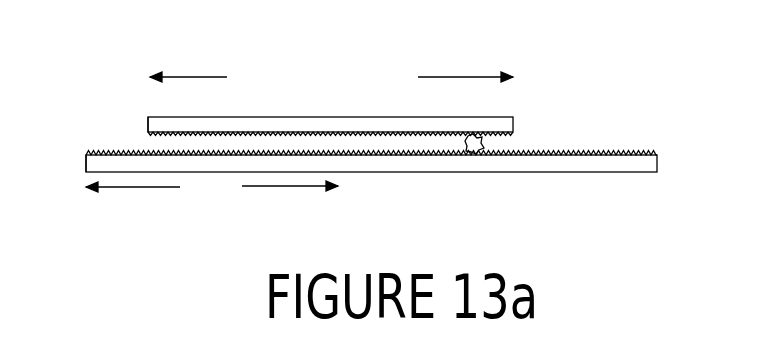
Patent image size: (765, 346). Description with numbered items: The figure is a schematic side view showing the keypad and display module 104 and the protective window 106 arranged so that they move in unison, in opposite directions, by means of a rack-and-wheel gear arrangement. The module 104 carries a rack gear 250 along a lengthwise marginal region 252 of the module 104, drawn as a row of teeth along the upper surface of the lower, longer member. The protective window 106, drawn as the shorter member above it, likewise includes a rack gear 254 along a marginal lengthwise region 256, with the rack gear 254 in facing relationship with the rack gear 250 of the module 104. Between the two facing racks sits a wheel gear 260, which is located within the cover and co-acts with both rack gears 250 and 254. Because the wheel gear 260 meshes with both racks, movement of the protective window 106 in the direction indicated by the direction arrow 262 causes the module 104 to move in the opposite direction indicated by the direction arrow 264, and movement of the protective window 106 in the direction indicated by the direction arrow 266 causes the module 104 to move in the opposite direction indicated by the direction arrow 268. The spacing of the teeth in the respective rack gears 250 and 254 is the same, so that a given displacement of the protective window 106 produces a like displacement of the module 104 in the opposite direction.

The keypad and display module 104 is at (640, 162).
The protective window 106 is at (490, 125).
The rack gear 250 is at (623, 149).
The lengthwise marginal region 252 is at (88, 138).
The rack gear 254 is at (512, 131).
The marginal lengthwise region 256 is at (140, 123).
The wheel gear 260 is at (477, 147).
The direction arrow 262 is at (452, 77).
The direction arrow 264 is at (115, 187).
The direction arrow 266 is at (180, 77).
The direction arrow 268 is at (273, 186).